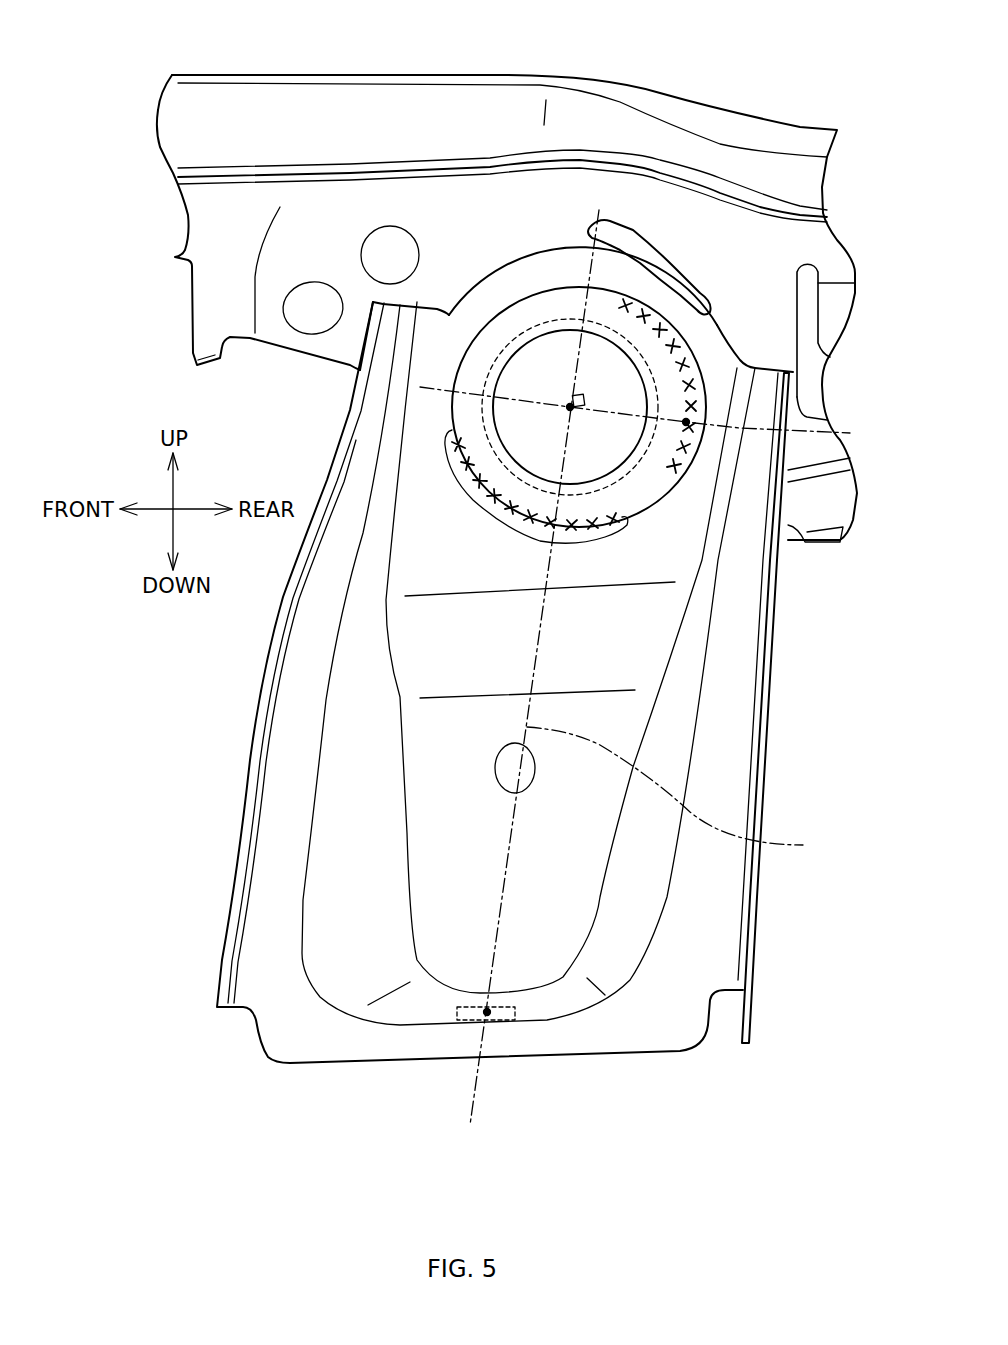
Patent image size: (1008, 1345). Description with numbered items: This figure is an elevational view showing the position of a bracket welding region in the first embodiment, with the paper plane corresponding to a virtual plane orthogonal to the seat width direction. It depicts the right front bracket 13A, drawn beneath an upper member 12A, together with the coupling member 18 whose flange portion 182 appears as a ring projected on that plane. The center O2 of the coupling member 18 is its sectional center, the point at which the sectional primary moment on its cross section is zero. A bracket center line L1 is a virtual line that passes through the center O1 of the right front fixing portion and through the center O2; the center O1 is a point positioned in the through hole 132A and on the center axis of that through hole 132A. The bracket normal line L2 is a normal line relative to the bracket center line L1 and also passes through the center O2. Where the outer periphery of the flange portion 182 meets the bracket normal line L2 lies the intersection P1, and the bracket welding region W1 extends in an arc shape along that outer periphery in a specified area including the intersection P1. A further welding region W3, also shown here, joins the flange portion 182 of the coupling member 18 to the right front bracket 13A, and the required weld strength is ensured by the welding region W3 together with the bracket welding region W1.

The roof side rail / upper body member 12A is at (640, 88).
The right front bracket 13A is at (772, 730).
The coupling member 18 is at (579, 360).
The flange portion 182 is at (570, 407).
The center of the coupling member O2 is at (570, 407).
The bracket normal line L2 is at (650, 413).
The bracket welding region W1 is at (688, 341).
The intersection P1 is at (686, 422).
The welding region W3 is at (485, 505).
The bracket center line L1 is at (681, 793).
The through hole 132A is at (460, 1020).
The center of the right front fixing portion O1 is at (487, 1013).